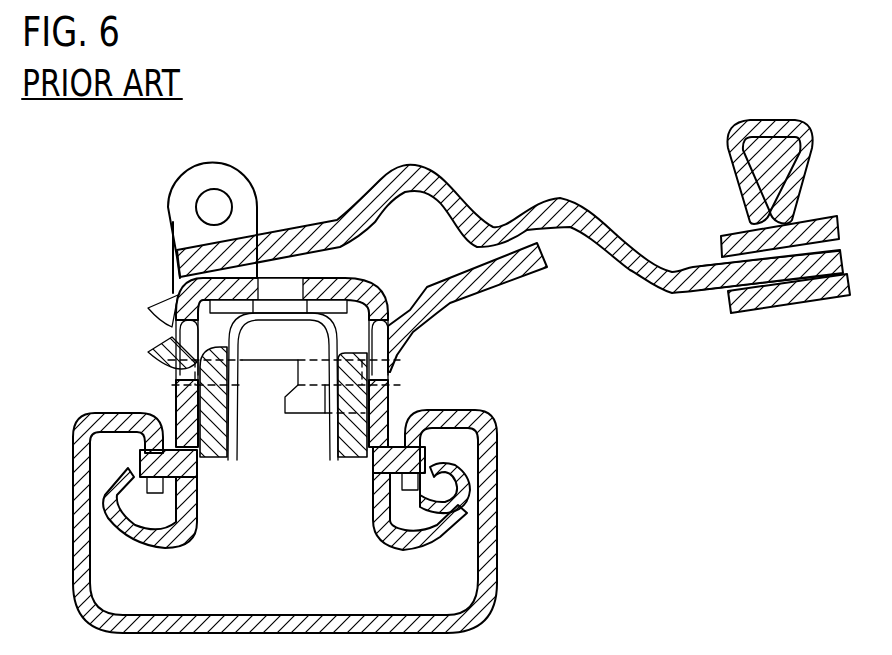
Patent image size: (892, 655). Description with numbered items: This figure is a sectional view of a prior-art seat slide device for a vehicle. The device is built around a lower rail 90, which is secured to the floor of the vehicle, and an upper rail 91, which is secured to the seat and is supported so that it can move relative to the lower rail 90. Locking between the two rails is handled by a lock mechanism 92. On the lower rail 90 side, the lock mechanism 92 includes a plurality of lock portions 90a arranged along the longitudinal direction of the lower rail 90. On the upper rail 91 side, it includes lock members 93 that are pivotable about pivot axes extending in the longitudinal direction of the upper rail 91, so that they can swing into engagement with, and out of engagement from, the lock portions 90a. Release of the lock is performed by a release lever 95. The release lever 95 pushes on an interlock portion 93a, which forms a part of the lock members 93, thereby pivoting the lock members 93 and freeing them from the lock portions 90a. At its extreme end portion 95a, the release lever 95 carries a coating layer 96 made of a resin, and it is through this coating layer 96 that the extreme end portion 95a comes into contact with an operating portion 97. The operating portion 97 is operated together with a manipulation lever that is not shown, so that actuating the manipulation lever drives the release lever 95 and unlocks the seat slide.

The lower rail 90 is at (82, 567).
The lock portions 90a is at (412, 495).
The upper rail 91 is at (107, 500).
The lock mechanism 92 is at (537, 400).
The lock members 93 is at (357, 415).
The interlock portion 93a is at (530, 262).
The release lever 95 is at (553, 203).
The extreme end portion 95a is at (780, 272).
The coating layer 96 is at (810, 220).
The operating portion 97 is at (730, 148).